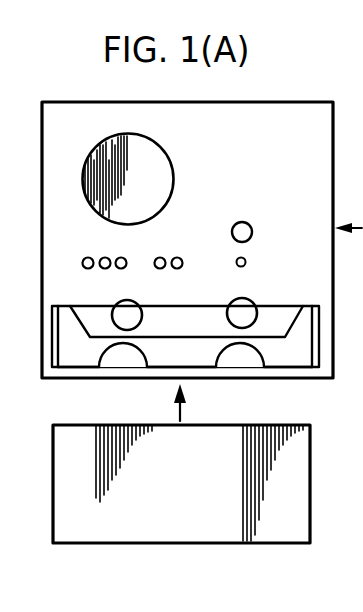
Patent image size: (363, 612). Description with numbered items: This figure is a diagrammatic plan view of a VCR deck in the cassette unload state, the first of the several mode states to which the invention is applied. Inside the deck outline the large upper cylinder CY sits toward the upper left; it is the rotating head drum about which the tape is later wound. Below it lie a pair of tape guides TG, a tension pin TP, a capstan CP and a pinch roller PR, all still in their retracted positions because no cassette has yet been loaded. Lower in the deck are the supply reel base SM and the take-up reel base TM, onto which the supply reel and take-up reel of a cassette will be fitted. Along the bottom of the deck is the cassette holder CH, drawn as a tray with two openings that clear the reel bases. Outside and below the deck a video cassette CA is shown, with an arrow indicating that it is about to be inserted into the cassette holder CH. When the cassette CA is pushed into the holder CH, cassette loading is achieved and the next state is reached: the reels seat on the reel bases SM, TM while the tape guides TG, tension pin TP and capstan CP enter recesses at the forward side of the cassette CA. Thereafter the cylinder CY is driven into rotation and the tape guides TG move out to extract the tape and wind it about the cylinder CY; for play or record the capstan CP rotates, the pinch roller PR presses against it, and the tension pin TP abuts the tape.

The upper cylinder CY is at (163, 160).
The tape guides TG is at (105, 257).
The tension pin TP is at (124, 268).
The pinch roller PR is at (248, 222).
The capstan CP is at (245, 262).
The supply reel base SM is at (142, 314).
The take-up reel base TM is at (253, 306).
The cassette holder CH is at (85, 357).
The video cassette CA is at (173, 541).